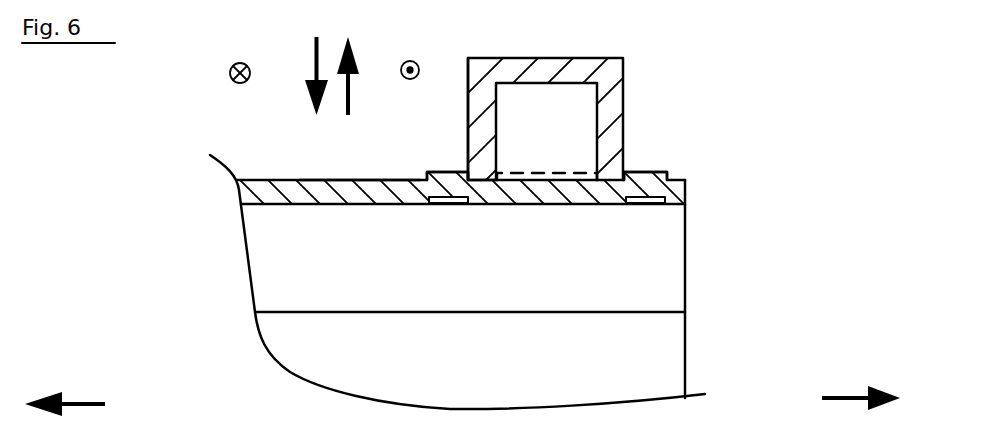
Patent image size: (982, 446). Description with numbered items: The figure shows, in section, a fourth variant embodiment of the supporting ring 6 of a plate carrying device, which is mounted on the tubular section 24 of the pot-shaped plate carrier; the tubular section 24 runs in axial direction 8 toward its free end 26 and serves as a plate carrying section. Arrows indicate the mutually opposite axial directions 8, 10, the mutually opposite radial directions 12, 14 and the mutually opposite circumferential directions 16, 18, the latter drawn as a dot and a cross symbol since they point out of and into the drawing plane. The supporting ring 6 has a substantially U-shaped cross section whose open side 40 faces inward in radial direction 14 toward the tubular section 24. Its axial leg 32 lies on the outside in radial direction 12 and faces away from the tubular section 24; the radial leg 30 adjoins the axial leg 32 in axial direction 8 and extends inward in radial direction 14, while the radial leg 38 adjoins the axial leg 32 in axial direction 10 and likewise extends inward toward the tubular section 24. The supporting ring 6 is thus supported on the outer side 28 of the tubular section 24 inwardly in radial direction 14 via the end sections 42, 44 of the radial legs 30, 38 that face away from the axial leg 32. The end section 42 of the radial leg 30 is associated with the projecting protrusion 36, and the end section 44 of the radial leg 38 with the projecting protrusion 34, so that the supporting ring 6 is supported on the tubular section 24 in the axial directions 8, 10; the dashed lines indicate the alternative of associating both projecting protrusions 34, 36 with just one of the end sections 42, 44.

The supporting ring 6 is at (541, 177).
The axial direction 8 is at (845, 396).
The axial direction 10 is at (88, 400).
The radial direction 12 is at (352, 92).
The radial direction 14 is at (312, 52).
The circumferential direction 16 is at (421, 66).
The circumferential direction 18 is at (229, 72).
The tubular section 24 is at (267, 190).
The free end 26 is at (688, 282).
The outer side 28 is at (358, 180).
The radial leg 30 is at (612, 113).
The axial leg 32 is at (528, 73).
The projecting protrusion 34 is at (448, 172).
The projecting protrusion 36 is at (647, 173).
The radial leg 38 is at (478, 122).
The open side 40 is at (553, 180).
The end section 42 is at (657, 203).
The end section 44 is at (483, 170).